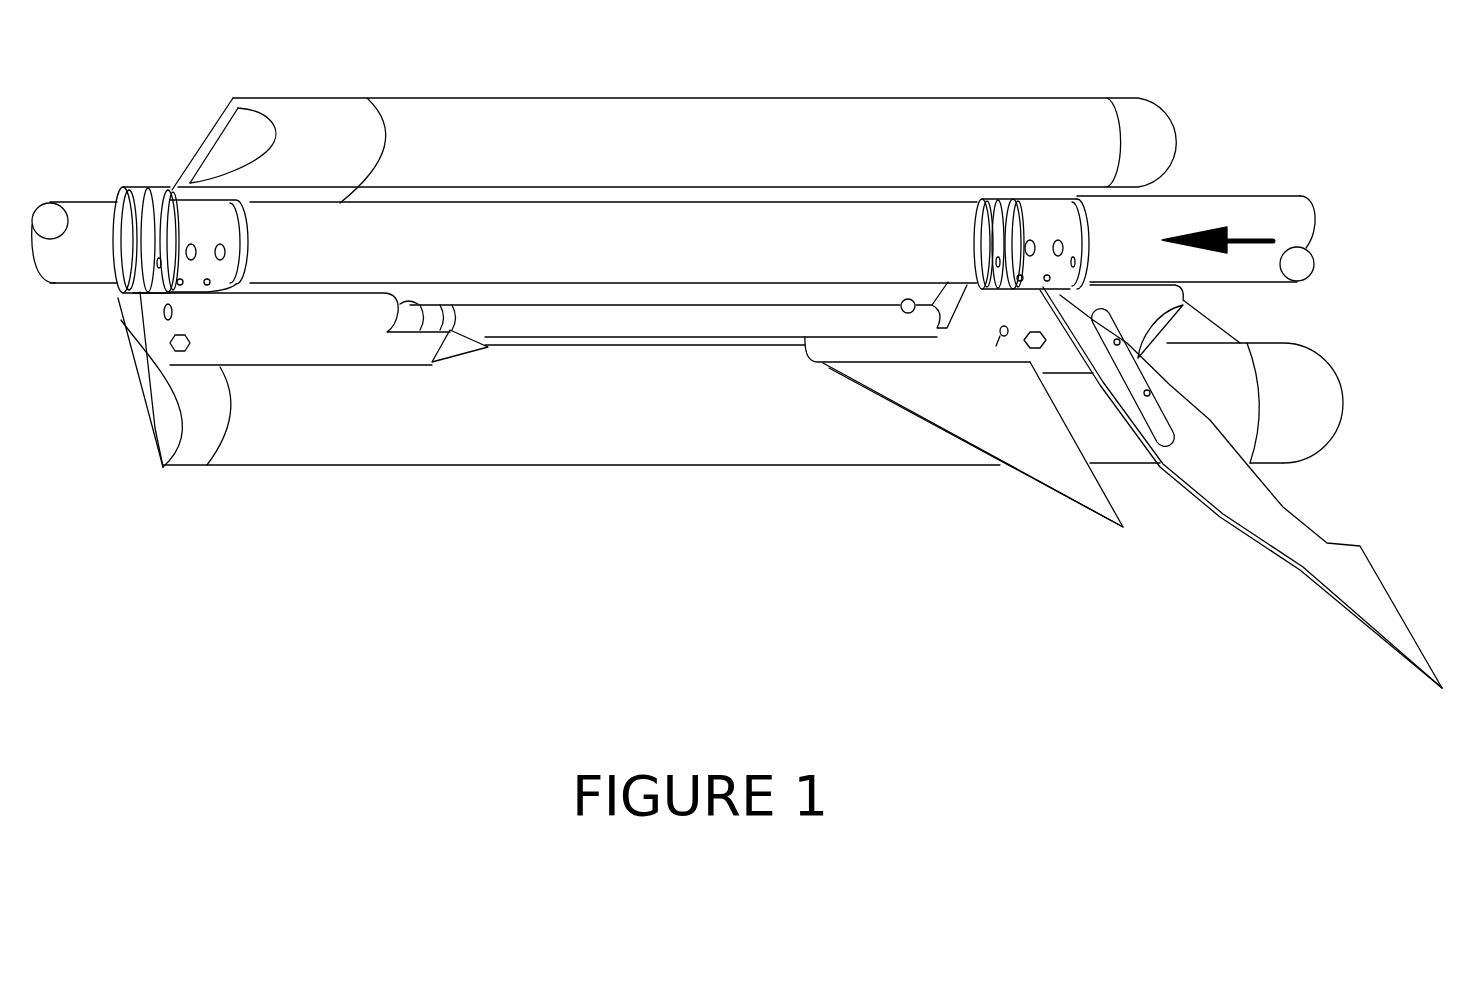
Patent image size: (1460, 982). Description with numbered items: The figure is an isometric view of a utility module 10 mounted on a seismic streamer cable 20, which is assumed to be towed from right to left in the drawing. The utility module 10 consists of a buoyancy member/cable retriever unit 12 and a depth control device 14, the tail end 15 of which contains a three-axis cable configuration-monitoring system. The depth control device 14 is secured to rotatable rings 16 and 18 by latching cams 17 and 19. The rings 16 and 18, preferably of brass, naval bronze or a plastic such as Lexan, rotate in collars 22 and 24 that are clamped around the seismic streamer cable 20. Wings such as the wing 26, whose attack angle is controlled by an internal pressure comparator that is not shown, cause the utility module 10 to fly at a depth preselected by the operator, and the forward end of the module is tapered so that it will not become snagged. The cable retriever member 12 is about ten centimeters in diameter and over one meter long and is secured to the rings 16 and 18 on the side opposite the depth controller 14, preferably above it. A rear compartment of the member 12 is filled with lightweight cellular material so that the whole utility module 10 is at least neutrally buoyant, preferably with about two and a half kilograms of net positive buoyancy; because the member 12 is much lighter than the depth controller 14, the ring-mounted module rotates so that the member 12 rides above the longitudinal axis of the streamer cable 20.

The utility module 10 is at (757, 77).
The buoyancy member/cable retriever unit 12 is at (508, 123).
The depth control device 14 is at (387, 443).
The tail end 15 is at (1335, 378).
The rotatable ring 16 is at (212, 227).
The latching cam 17 is at (177, 310).
The rotatable ring 18 is at (1040, 228).
The latching cam 19 is at (1008, 330).
The seismic streamer cable 20 is at (75, 213).
The collar 22 is at (242, 245).
The collar 24 is at (1077, 247).
The wing 26 is at (1292, 542).